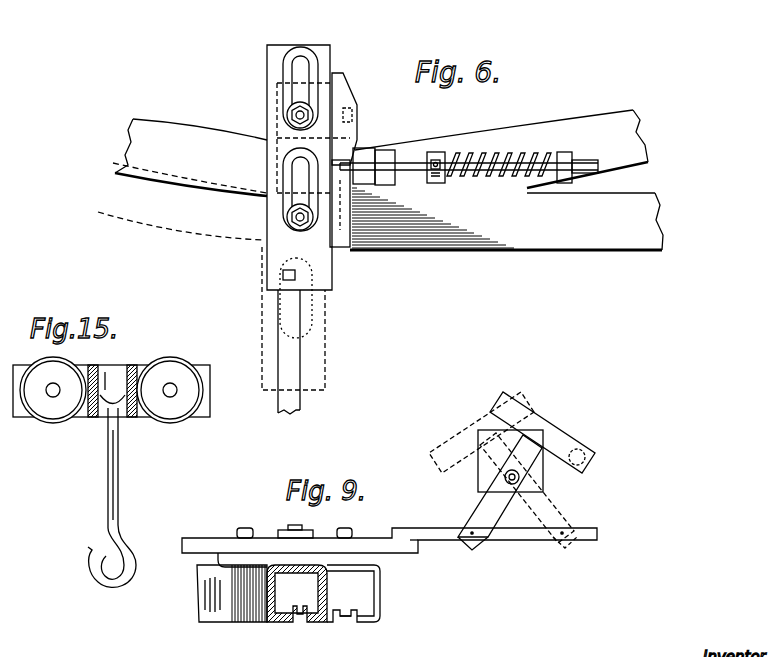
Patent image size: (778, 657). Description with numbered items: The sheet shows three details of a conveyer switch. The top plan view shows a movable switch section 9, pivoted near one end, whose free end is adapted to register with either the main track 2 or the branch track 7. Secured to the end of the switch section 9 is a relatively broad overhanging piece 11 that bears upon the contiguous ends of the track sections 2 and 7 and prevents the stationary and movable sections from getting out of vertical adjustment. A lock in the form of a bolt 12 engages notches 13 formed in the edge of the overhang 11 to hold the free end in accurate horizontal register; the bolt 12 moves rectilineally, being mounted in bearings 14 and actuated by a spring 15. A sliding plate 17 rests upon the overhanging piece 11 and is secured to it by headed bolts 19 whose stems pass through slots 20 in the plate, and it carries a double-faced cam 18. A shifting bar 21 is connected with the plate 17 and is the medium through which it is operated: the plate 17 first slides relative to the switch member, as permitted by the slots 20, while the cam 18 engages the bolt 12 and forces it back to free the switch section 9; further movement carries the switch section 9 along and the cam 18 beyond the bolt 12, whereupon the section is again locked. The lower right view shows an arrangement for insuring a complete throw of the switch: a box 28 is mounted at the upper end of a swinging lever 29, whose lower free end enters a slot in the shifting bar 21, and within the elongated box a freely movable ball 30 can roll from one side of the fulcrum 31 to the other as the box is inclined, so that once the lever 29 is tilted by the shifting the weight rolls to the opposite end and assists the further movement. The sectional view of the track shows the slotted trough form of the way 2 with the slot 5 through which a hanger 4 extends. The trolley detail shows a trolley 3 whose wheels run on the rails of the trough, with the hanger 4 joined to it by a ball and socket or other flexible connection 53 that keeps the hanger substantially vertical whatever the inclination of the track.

In FIG. 6, the track 2 is at (501, 149).
In FIG. 9, the track 2 is at (205, 590).
In FIG. 15, the trolley 3 is at (111, 404).
In FIG. 15, the hanger 4 is at (110, 471).
In FIG. 9, the slot 5 is at (351, 618).
In FIG. 6, the branch track 7 is at (506, 219).
In FIG. 9, the branch track 7 is at (381, 599).
In FIG. 6, the movable switch section 9 is at (182, 179).
In FIG. 9, the movable switch section 9 is at (278, 622).
In FIG. 6, the overhanging piece 11 is at (352, 152).
In FIG. 9, the overhanging piece 11 is at (268, 553).
In FIG. 6, the bolt 12 is at (408, 163).
In FIG. 6, the notches 13 is at (353, 112).
In FIG. 6, the bearings 14 is at (438, 156).
In FIG. 9, the bearings 14 is at (304, 534).
In FIG. 6, the spring 15 is at (505, 150).
In FIG. 6, the sliding plate 17 is at (270, 84).
In FIG. 9, the sliding plate 17 is at (366, 540).
In FIG. 6, the double-faced cam 18 is at (340, 96).
In FIG. 6, the headed bolts 19 is at (290, 115).
In FIG. 9, the headed bolts 19 is at (243, 529).
In FIG. 6, the slots 20 is at (298, 66).
In FIG. 6, the shifting bar 21 is at (300, 404).
In FIG. 9, the shifting bar 21 is at (527, 541).
In FIG. 9, the box 28 is at (556, 427).
In FIG. 9, the lever 29 is at (482, 508).
In FIG. 9, the ball 30 is at (592, 453).
In FIG. 9, the fulcrum 31 is at (520, 478).
In FIG. 15, the flexible connection 53 is at (118, 412).